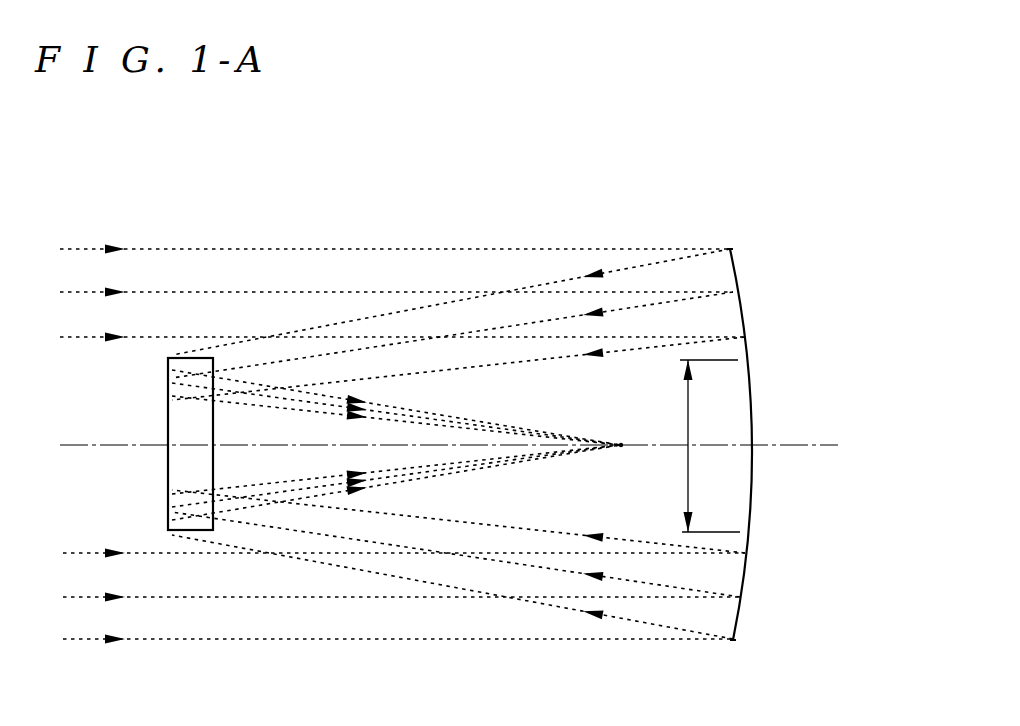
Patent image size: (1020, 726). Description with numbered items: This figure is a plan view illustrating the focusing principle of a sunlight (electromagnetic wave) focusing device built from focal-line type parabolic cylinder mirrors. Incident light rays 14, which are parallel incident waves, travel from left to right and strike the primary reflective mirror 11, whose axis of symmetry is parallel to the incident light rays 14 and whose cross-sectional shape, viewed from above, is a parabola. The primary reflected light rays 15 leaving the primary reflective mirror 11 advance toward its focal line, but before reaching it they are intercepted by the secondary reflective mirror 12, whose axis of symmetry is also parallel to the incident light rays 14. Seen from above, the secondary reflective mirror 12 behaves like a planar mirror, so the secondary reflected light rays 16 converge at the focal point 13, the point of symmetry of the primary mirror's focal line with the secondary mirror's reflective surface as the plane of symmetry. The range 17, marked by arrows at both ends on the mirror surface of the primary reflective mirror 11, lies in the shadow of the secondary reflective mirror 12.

The primary reflective mirror 11 is at (752, 508).
The secondary reflective mirror 12 is at (190, 421).
The focal point 13 is at (622, 445).
The incident light rays 14 is at (232, 249).
The primary reflected light rays 15 is at (617, 268).
The secondary reflected light rays 16 is at (385, 400).
The range 17 is at (752, 422).